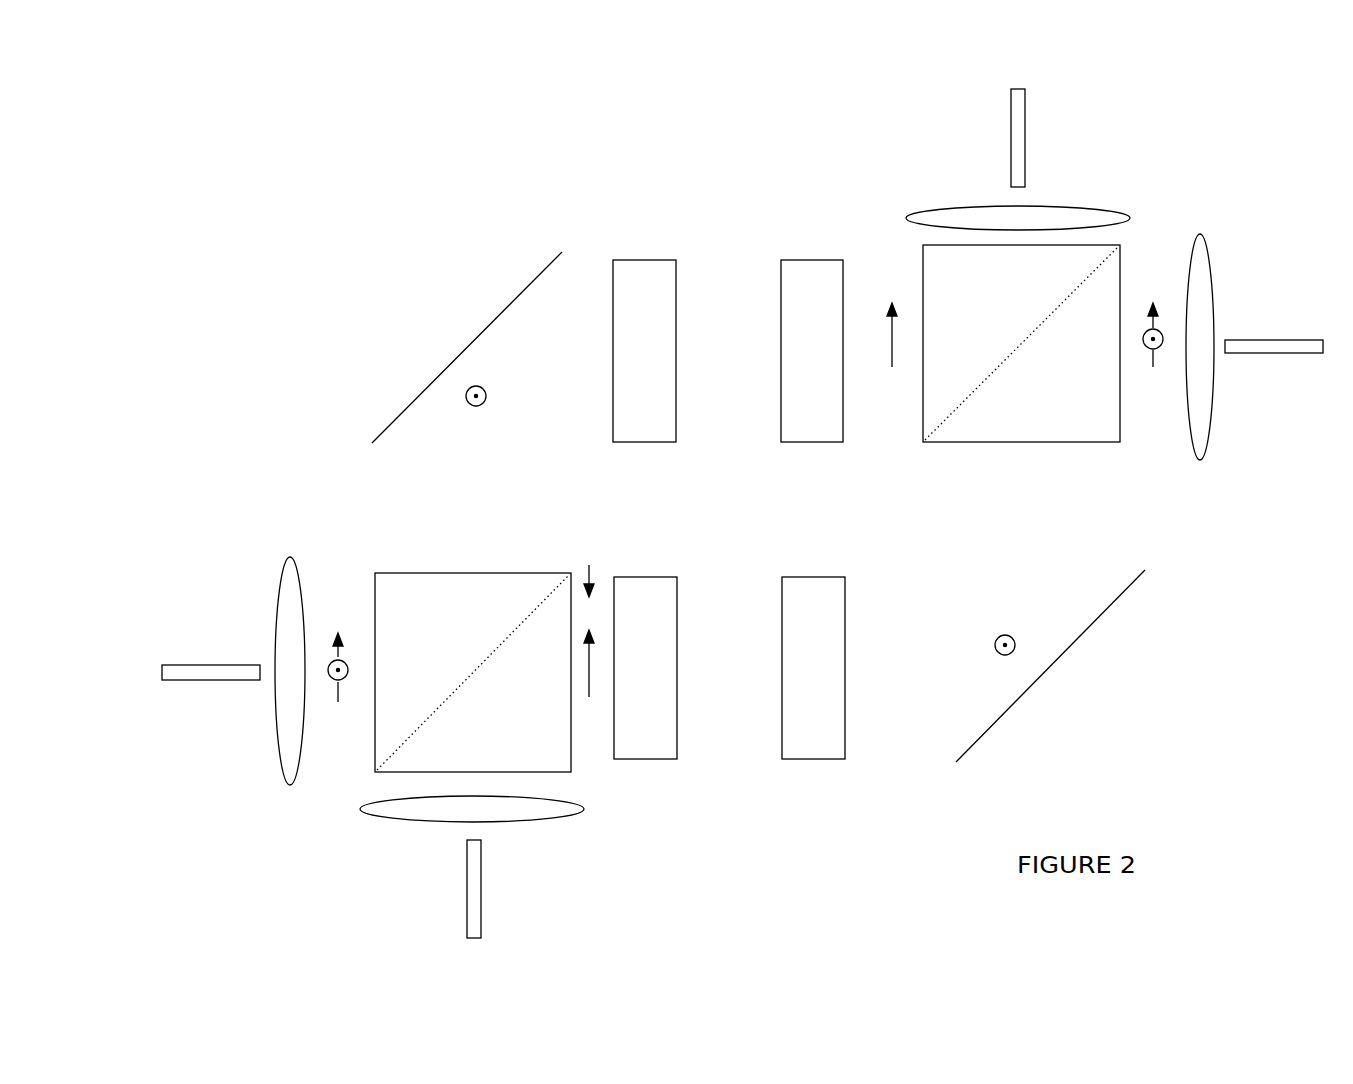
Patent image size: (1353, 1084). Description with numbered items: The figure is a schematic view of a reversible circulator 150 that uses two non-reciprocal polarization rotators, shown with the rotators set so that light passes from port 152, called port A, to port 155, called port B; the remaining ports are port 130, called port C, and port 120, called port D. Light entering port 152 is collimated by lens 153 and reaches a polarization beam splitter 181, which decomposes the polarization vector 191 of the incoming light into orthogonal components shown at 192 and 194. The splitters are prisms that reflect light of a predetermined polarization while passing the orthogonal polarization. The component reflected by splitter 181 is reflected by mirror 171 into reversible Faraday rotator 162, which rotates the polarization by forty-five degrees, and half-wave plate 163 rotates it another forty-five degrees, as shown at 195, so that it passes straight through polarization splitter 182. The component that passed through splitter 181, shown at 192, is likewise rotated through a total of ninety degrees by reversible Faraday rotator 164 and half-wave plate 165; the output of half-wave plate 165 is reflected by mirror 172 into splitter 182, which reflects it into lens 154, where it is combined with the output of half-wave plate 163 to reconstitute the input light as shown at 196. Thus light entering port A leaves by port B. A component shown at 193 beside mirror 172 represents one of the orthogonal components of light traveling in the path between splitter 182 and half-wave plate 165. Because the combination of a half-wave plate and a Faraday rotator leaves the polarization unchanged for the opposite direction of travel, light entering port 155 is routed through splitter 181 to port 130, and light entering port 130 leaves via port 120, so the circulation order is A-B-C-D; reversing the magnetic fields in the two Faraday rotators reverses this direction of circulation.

The reversible circulator 150 is at (284, 217).
The port 120 is at (1011, 123).
The port 130 is at (467, 903).
The port 152 is at (195, 665).
The lens 153 is at (290, 559).
The lens 154 is at (1187, 235).
The port 155 is at (1294, 340).
The reversible Faraday rotator 162 is at (657, 260).
The half-wave plate 163 is at (820, 260).
The reversible Faraday rotator 164 is at (660, 759).
The half-wave plate 165 is at (822, 759).
The mirror 171 is at (422, 392).
The mirror 172 is at (1097, 622).
The polarization beam splitter 181 is at (417, 573).
The polarization beam splitter 182 is at (1110, 442).
The polarization vector 191 is at (349, 674).
The orthogonal polarization component 192 is at (591, 609).
The orthogonal polarization component 193 is at (995, 648).
The orthogonal polarization component 194 is at (519, 400).
The rotated polarization component 195 is at (892, 365).
The reconstituted light 196 is at (1163, 341).